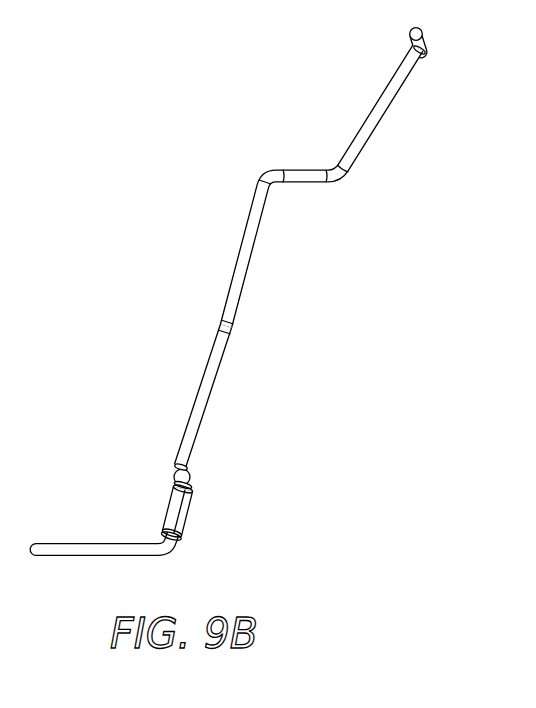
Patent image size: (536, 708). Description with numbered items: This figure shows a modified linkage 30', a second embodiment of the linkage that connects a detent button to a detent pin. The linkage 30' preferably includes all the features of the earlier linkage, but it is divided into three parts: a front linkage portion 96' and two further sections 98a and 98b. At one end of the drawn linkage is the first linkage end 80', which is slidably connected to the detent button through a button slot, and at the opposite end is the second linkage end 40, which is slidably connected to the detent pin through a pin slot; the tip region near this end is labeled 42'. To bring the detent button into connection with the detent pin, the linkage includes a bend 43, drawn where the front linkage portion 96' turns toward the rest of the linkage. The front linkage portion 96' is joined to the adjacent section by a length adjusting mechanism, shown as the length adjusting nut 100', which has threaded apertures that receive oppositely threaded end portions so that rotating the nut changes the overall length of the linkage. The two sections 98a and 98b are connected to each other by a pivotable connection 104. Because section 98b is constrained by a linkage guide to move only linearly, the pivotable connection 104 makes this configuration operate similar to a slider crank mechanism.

The linkage 30' is at (308, 233).
The second linkage end 40 is at (420, 40).
The distal end portion 42' is at (442, 59).
The linkage portion section 98b is at (257, 303).
The linkage portion section 98a is at (196, 378).
The pivotable connection 104 is at (261, 350).
The length adjusting nut 100' is at (226, 502).
The first linkage end 80' is at (104, 518).
The bend 43 is at (168, 550).
The front linkage portion 96' is at (164, 542).